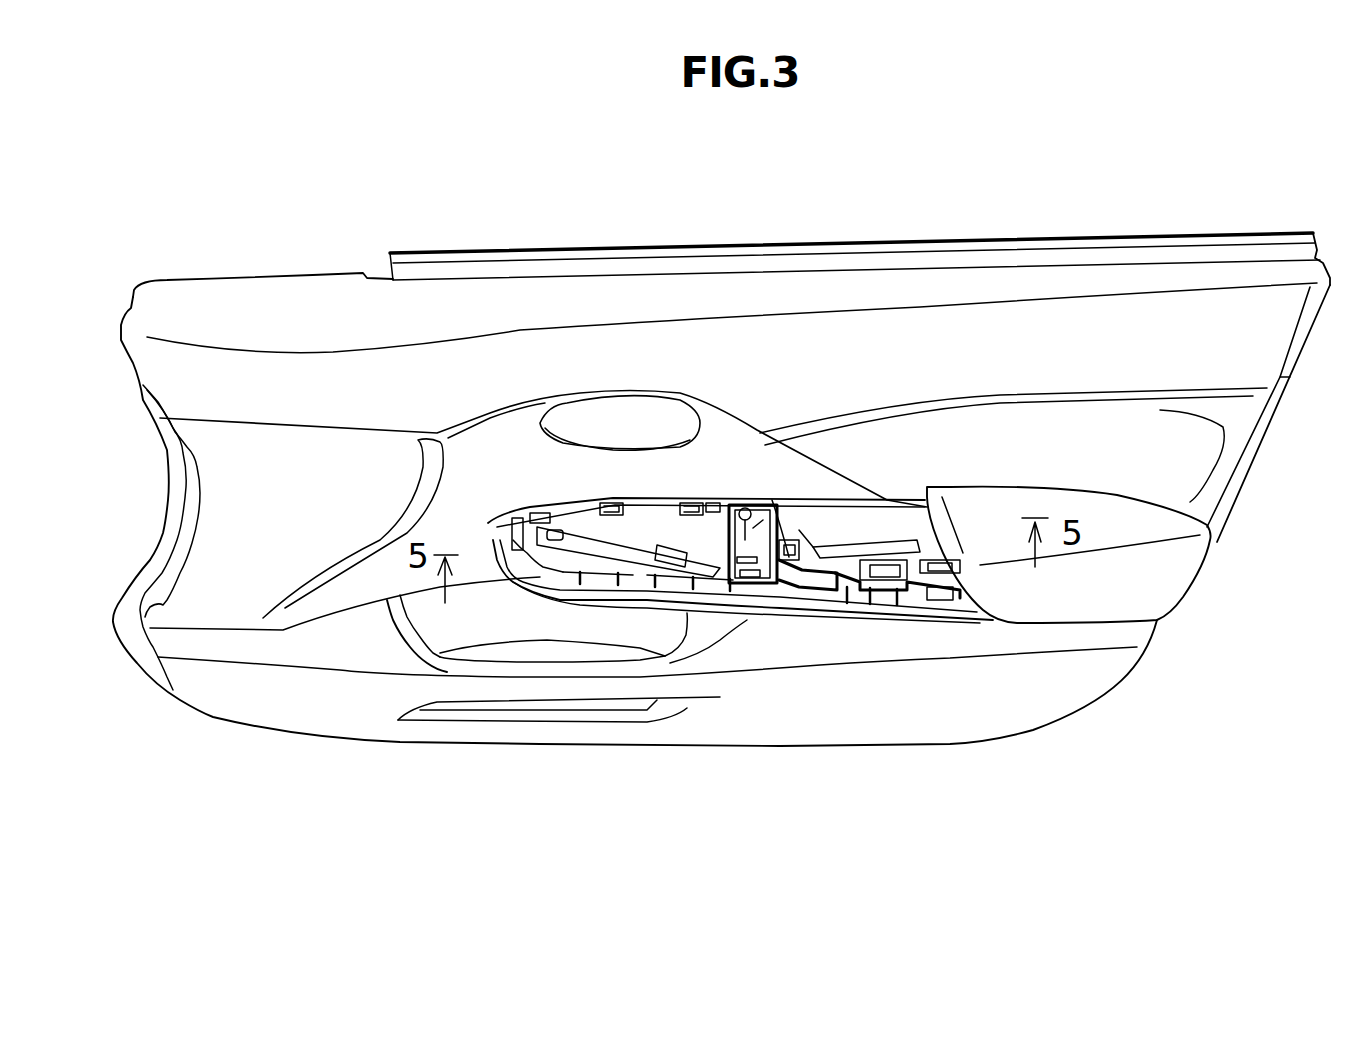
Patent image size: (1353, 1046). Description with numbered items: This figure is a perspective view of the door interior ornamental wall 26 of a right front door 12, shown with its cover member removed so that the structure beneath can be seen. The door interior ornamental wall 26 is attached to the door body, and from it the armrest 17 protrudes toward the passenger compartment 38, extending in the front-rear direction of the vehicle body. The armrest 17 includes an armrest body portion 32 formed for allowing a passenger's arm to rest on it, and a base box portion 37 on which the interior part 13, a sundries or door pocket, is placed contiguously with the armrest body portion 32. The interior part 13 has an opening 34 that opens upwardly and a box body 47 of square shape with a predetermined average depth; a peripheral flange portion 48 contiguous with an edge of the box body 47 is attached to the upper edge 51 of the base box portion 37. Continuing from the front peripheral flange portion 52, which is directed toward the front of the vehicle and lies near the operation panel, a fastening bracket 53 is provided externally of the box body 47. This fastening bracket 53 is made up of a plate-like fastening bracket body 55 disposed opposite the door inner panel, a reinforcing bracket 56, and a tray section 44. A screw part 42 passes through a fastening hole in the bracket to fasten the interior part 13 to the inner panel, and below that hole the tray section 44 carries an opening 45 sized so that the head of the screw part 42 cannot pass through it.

The door 12 is at (427, 210).
The interior part 13 is at (872, 517).
The armrest 17 is at (963, 455).
The door interior ornamental wall 26 is at (305, 293).
The armrest body portion 32 is at (1067, 482).
The opening 34 is at (833, 507).
The base box portion 37 is at (765, 613).
The passenger compartment 38 is at (1085, 830).
The screw part 42 is at (749, 505).
The tray section 44 is at (657, 507).
The opening 45 is at (687, 507).
The box body 47 is at (888, 543).
The peripheral flange portion 48 is at (812, 560).
The upper edge 51 is at (860, 605).
The front peripheral flange portion 52 is at (812, 560).
The fastening bracket 53 is at (694, 173).
The fastening bracket body 55 is at (713, 507).
The reinforcing bracket 56 is at (767, 500).